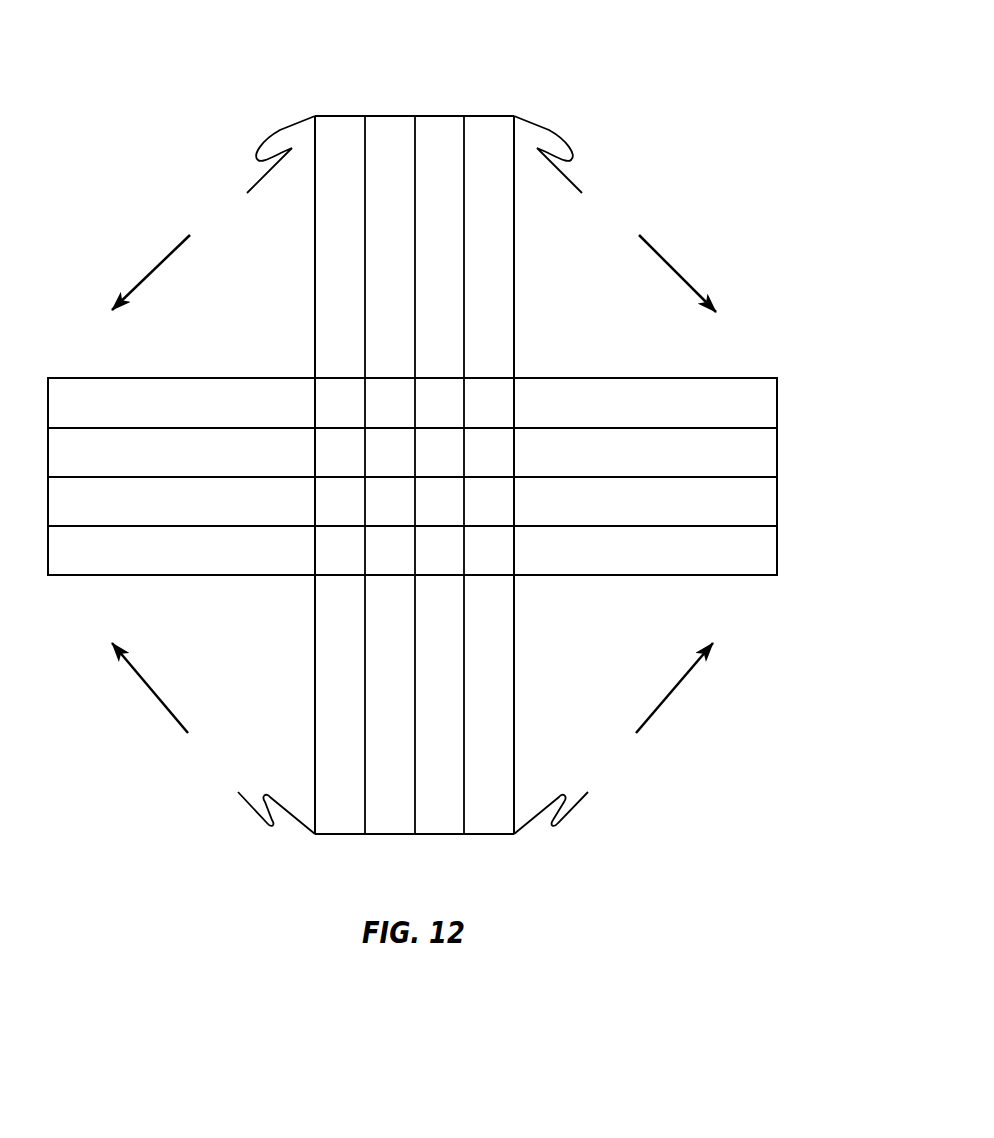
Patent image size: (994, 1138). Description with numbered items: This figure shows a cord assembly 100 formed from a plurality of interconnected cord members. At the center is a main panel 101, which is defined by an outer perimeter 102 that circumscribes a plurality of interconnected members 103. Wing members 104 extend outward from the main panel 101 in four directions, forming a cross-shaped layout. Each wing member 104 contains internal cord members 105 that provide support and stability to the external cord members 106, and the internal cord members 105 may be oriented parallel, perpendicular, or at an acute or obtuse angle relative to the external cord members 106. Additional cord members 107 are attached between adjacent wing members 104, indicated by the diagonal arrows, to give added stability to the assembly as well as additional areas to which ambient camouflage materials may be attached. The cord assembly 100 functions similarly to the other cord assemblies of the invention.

The cord assembly 100 is at (622, 184).
The main panel 101 is at (389, 500).
The outer perimeter 102 is at (338, 378).
The interconnected members 103 is at (437, 428).
The wing members 104 is at (383, 100).
The internal cord members 105 is at (465, 165).
The external cord members 106 is at (672, 575).
The additional cord members 107 is at (147, 687).